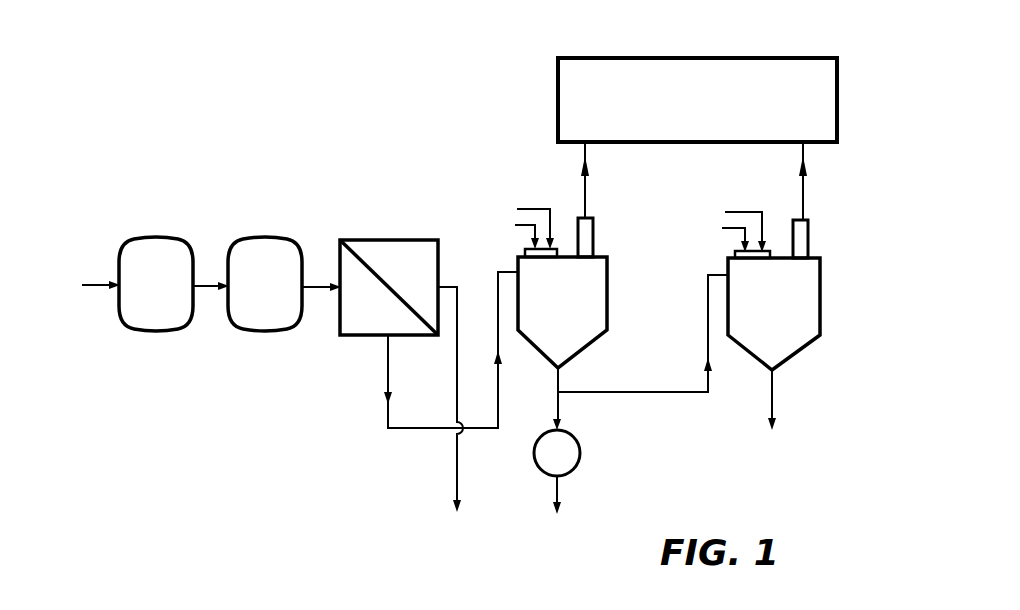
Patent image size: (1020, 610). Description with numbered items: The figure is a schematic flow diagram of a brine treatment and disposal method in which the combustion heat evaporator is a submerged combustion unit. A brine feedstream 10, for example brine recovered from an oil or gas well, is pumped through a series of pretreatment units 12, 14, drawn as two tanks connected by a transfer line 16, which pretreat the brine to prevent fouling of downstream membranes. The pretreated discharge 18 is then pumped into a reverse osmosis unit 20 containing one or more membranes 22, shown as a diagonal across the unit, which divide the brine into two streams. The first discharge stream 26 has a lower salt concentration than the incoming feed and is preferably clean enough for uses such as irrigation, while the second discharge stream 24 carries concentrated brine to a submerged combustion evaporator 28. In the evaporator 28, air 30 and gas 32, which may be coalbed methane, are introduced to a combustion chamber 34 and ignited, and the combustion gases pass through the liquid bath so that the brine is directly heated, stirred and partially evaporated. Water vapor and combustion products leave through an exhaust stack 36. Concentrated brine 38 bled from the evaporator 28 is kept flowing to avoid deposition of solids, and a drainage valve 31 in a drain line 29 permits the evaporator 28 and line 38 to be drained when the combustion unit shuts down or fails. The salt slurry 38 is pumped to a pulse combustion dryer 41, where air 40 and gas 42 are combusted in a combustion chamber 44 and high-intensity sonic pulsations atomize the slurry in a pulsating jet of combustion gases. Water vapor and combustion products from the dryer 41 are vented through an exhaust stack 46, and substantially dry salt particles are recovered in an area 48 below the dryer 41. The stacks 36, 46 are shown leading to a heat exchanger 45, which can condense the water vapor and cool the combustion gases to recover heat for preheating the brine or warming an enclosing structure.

The brine feedstream 10 is at (101, 284).
The pretreatment unit 12 is at (165, 239).
The pretreatment unit 14 is at (263, 331).
The transfer line 16 is at (206, 289).
The pretreated brine feedstream 18 is at (317, 284).
The reverse osmosis unit 20 is at (371, 239).
The membrane 22 is at (378, 277).
The second discharge stream 24 is at (419, 429).
The first discharge stream 26 is at (456, 400).
The submerged combustion evaporator 28 is at (607, 279).
The drain line 29 is at (562, 406).
The air 30 is at (517, 209).
The drainage valve 31 is at (577, 466).
The gas 32 is at (515, 225).
The combustion chamber 34 is at (525, 253).
The exhaust stack 36 is at (595, 233).
The concentrated brine 38 is at (636, 392).
The air 40 is at (725, 212).
The pulse combustion dryer 41 is at (822, 283).
The gas 42 is at (722, 228).
The combustion chamber 44 is at (735, 256).
The heat exchanger 45 is at (837, 86).
The exhaust stack 46 is at (810, 236).
The area 48 is at (776, 386).